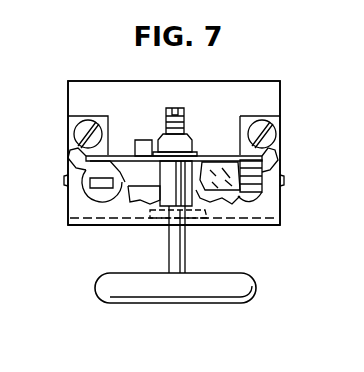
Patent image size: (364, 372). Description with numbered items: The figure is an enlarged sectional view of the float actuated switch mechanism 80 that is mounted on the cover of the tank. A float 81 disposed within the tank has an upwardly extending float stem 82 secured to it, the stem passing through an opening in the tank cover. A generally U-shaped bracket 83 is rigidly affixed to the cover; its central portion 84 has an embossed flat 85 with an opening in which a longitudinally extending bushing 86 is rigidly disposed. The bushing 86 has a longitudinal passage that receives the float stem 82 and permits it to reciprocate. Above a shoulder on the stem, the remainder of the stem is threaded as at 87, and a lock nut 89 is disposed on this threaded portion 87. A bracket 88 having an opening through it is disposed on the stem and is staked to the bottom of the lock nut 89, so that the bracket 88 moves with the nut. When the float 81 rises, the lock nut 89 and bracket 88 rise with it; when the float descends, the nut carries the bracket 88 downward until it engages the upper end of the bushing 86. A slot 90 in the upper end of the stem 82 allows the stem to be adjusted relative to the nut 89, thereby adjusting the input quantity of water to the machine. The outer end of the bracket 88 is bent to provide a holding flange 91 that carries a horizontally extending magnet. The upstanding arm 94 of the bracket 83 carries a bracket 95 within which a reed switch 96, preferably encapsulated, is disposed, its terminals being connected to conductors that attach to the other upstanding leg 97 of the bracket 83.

The float actuated switch mechanism 80 is at (58, 76).
The float 81 is at (210, 300).
The float stem 82 is at (187, 246).
The U-shaped bracket 83 is at (66, 96).
The central portion 84 is at (272, 226).
The embossed flat 85 is at (153, 219).
The bushing 86 is at (162, 176).
The threaded portion 87 is at (167, 127).
The bracket 88 is at (149, 133).
The lock nut 89 is at (188, 153).
The slot 90 is at (180, 109).
The holding flange 91 is at (206, 152).
The upstanding arm 94 is at (268, 93).
The bracket 95 is at (88, 163).
The reed switch 96 is at (250, 172).
The upstanding leg 97 is at (78, 198).